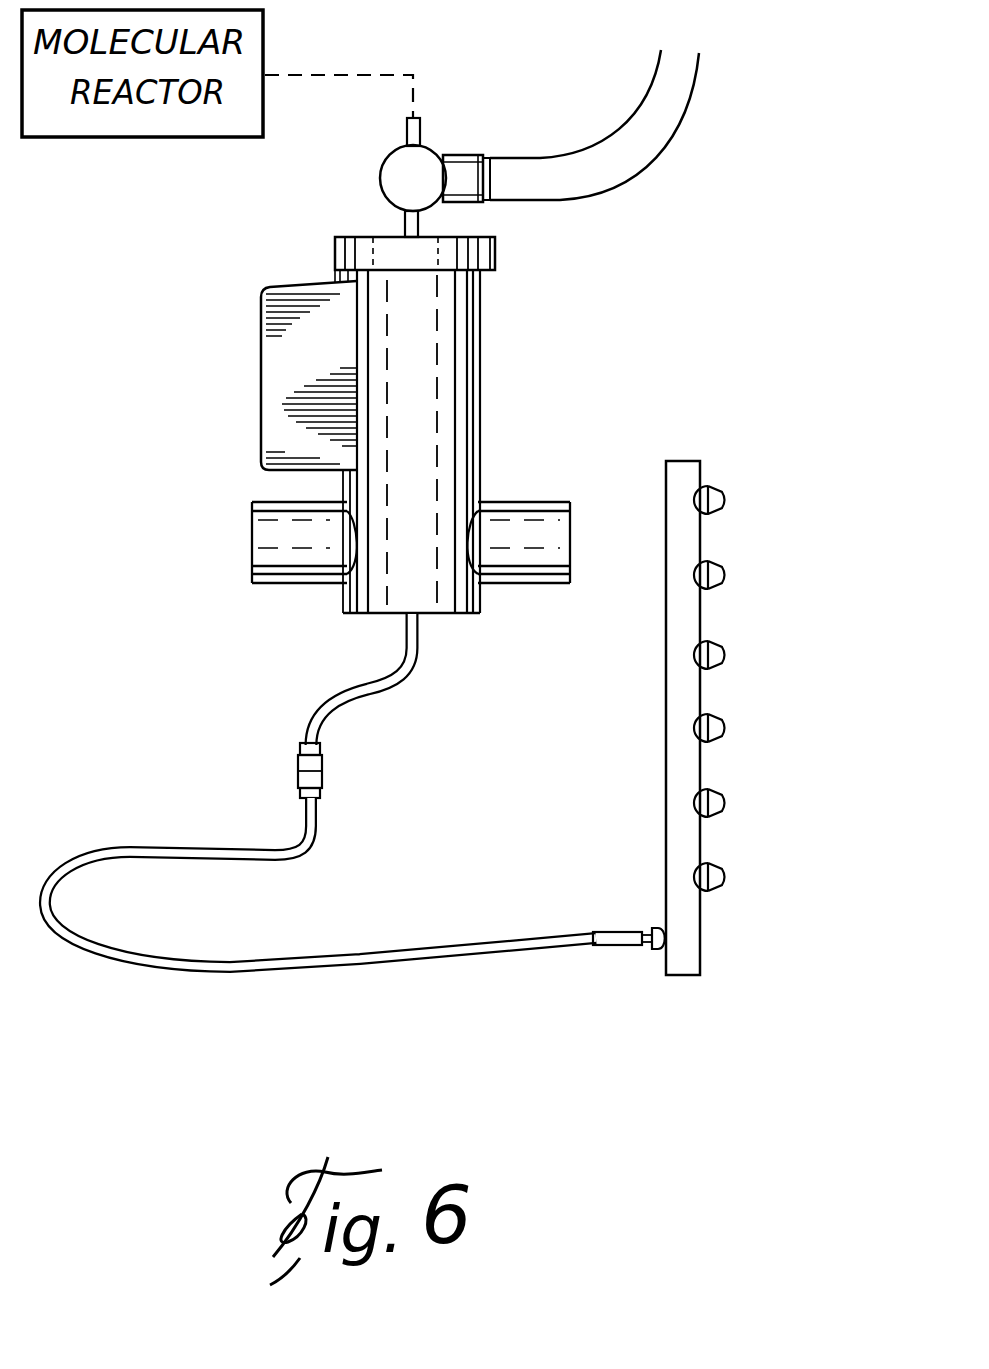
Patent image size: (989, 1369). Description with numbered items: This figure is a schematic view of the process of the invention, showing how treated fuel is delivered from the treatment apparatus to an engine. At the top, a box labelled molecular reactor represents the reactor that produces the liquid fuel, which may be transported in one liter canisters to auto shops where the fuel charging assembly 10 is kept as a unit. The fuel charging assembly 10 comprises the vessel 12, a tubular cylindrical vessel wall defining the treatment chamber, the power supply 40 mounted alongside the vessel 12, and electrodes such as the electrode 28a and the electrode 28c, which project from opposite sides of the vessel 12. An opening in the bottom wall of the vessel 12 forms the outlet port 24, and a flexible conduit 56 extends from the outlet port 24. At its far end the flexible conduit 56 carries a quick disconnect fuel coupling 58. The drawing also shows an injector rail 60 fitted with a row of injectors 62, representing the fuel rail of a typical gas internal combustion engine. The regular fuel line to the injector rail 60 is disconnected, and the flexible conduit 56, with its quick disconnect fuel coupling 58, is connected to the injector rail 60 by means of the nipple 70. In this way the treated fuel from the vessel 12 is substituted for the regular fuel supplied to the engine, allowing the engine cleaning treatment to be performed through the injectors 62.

The fuel charging assembly 10 is at (190, 455).
The vessel 12 is at (473, 328).
The outlet port 24 is at (418, 613).
The electrode 28a is at (283, 567).
The electrode 28c is at (537, 517).
The power supply 40 is at (270, 373).
The flexible conduit 56 is at (150, 849).
The quick disconnect fuel coupling 58 is at (617, 938).
The injector rail 60 is at (673, 772).
The injectors 62 is at (722, 655).
The nipple 70 is at (648, 946).